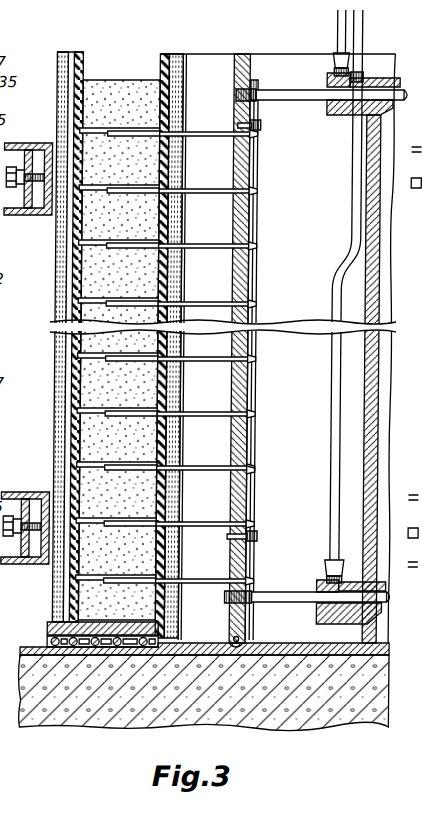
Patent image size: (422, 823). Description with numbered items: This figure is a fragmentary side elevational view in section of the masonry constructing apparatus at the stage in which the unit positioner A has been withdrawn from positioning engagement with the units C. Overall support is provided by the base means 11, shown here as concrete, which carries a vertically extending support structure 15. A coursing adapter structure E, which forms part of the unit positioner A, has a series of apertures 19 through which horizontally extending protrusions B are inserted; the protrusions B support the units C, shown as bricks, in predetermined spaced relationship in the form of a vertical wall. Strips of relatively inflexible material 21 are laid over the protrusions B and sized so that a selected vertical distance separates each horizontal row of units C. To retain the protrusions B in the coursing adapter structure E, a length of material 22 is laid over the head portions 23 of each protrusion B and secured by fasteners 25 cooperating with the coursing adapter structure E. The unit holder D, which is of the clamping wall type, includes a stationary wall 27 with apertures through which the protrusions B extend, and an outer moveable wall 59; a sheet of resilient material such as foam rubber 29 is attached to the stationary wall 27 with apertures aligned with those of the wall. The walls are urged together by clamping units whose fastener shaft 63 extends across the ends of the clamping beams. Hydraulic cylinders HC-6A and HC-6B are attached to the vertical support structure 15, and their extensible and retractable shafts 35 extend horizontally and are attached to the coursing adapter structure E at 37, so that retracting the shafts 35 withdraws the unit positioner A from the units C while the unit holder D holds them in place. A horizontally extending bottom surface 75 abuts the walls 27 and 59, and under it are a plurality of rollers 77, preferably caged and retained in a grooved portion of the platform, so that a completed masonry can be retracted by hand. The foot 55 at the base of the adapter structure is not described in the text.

The base means 11 is at (280, 722).
The vertically extending support structure 15 is at (383, 470).
The apertures 19 is at (246, 434).
The strips of relatively inflexible material 21 is at (150, 241).
The length of material 22 is at (260, 226).
The head portions 23 is at (260, 190).
The fasteners 25 is at (262, 127).
The stationary wall 27 is at (173, 397).
The sheet of resilient material 29 is at (166, 58).
The extensible and retractable shafts 35 is at (297, 90).
The attachment of shaft to coursing adapter structure 37 is at (258, 85).
The foot 55 is at (229, 647).
The outer moveable wall 59 is at (57, 244).
The fastener shaft 63 is at (28, 145).
The bottom surface 75 is at (135, 628).
The rollers 77 is at (45, 644).
The unit positioner A is at (244, 48).
The protrusions B is at (228, 135).
The units C is at (104, 88).
The unit holder D is at (56, 317).
The coursing adapter structure E is at (245, 484).
The hydraulic cylinder HC-6A is at (390, 78).
The hydraulic cylinder HC-6B is at (345, 629).